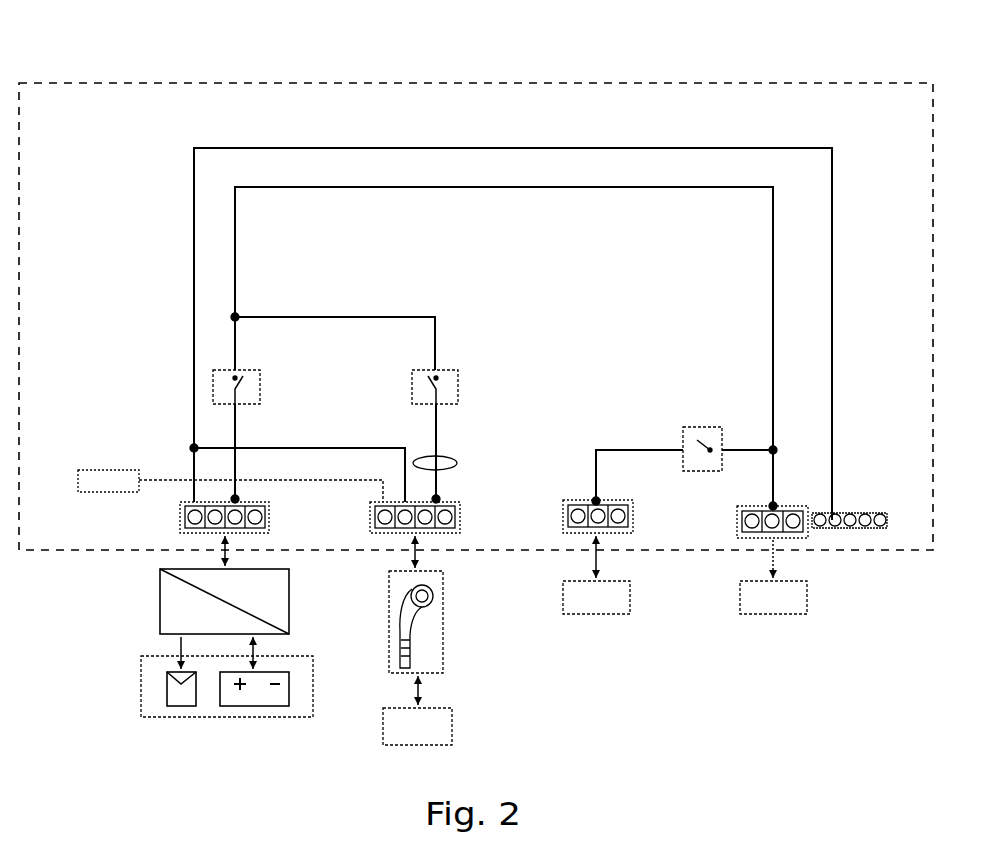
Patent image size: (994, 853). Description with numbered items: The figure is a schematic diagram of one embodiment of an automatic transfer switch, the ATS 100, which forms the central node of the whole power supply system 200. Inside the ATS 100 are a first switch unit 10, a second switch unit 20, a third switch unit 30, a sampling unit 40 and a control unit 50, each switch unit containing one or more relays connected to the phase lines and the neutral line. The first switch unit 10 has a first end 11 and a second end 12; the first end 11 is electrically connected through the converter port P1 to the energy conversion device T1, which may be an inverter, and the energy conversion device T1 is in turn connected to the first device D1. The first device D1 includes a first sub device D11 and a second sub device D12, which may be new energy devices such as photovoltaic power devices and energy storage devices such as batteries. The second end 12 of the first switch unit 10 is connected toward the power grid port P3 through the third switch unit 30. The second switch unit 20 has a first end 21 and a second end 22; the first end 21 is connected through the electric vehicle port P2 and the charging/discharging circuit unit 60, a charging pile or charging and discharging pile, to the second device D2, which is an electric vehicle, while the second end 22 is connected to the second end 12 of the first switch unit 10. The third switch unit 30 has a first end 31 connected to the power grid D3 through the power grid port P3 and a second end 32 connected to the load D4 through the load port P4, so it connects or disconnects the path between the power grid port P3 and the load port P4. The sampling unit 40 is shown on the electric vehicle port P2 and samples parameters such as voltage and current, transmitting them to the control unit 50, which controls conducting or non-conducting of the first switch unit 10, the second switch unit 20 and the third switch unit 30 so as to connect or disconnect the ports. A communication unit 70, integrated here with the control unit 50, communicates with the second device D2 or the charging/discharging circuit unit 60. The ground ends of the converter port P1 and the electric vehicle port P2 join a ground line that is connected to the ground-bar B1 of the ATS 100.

The power supply system 200 is at (530, 40).
The ATS 100 is at (653, 125).
The first switch unit 10 is at (259, 423).
The first end 11 is at (270, 428).
The second end 12 is at (270, 366).
The second switch unit 20 is at (461, 423).
The first end 21 is at (466, 428).
The second end 22 is at (466, 366).
The third switch unit 30 is at (686, 444).
The first end 31 is at (677, 443).
The second end 32 is at (745, 443).
The sampling unit 40 is at (462, 461).
The control unit 50 is at (230, 459).
The communication unit 70 is at (88, 466).
The charging/discharging circuit unit 60 is at (444, 607).
The ground-bar B1 is at (852, 511).
The energy conversion device T1 is at (157, 610).
The converter port P1 is at (275, 515).
The electric vehicle port P2 is at (464, 522).
The power grid port P3 is at (638, 518).
The load port P4 is at (733, 523).
The first device D1 is at (228, 678).
The first sub device D11 is at (176, 690).
The second sub device D12 is at (284, 694).
The second device D2 is at (453, 728).
The power grid D3 is at (633, 596).
The load D4 is at (810, 596).